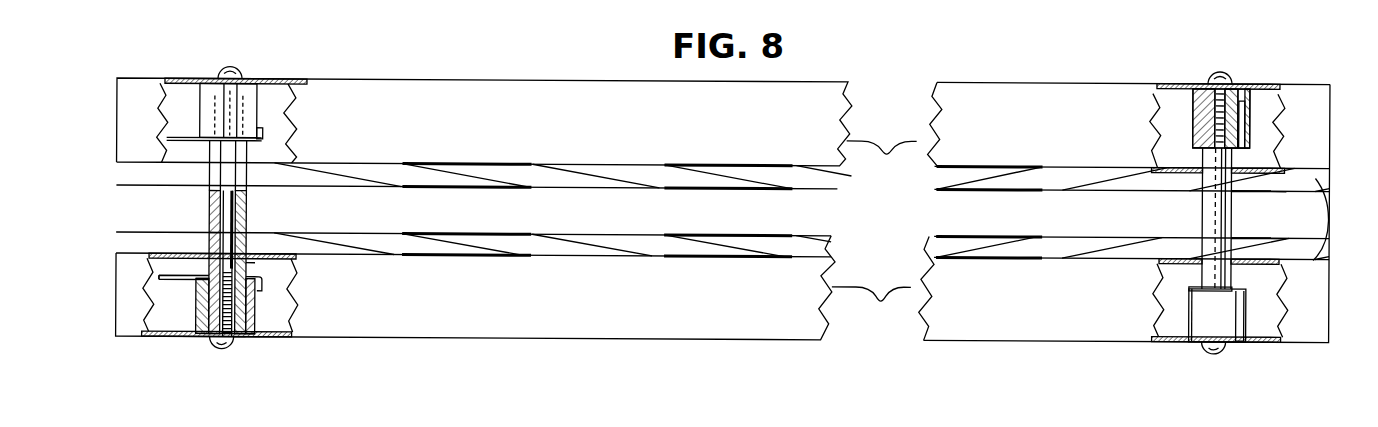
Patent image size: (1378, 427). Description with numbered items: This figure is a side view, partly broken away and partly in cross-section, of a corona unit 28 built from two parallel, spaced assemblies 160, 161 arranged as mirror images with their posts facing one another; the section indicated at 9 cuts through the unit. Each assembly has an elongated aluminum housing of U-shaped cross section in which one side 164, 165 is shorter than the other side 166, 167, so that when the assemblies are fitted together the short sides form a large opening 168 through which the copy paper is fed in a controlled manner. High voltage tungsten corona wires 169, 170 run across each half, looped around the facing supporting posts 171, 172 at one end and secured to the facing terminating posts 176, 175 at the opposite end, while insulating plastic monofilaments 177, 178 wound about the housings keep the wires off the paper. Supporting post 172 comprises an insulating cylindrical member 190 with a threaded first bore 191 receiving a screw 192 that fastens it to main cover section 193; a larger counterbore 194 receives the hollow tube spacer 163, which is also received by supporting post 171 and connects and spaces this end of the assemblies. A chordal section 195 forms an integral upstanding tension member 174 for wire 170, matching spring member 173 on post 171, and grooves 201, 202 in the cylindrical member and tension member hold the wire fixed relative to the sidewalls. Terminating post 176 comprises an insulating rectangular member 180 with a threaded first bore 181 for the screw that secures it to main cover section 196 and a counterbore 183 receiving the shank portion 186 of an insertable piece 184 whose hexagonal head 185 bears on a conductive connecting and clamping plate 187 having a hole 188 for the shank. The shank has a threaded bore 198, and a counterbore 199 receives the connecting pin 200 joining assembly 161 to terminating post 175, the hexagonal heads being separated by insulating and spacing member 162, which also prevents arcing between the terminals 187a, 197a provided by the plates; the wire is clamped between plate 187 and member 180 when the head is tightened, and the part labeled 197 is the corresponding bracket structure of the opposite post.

The section line 9 is at (115, 246).
The corona unit 28 is at (971, 78).
The corona unit assembly 160 is at (381, 70).
The corona unit assembly 161 is at (416, 342).
The insulating and spacing member 162 is at (200, 206).
The hollow tube spacer 163 is at (1222, 217).
The short side 164 is at (1318, 334).
The short side 165 is at (135, 93).
The long side 166 is at (1182, 247).
The long side 167 is at (1125, 185).
The opening 168 is at (1309, 219).
The corona wire 169 is at (871, 307).
The corona wire 170 is at (881, 164).
The supporting post 171 is at (1197, 305).
The supporting post 172 is at (1193, 117).
The spring member 173 is at (1245, 310).
The tension member 174 is at (1250, 104).
The terminating post 175 is at (254, 100).
The terminating post 176 is at (243, 340).
The insulating plastic monofilament 177 is at (601, 258).
The insulating plastic monofilament 178 is at (620, 177).
The rectangular member 180 is at (203, 311).
The first bore 181 is at (213, 338).
The counterbore 183 is at (256, 311).
The insertable piece 184 is at (266, 261).
The hexagonal head 185 is at (210, 268).
The shank portion 186 is at (200, 291).
The connecting and clamping plate 187 is at (262, 285).
The terminal 187a is at (160, 278).
The hole 188 is at (253, 257).
The cylindrical member 190 is at (1205, 82).
The first bore 191 is at (1243, 85).
The screw 192 is at (1215, 80).
The main cover section 193 is at (1058, 80).
The counterbore 194 is at (1193, 99).
The chordal section 195 is at (1246, 118).
The main cover section 196 is at (656, 341).
The bracket 197 is at (183, 134).
The terminal 197a is at (166, 137).
The threaded bore 198 is at (200, 311).
The counterbore 199 is at (212, 238).
The connecting pin 200 is at (210, 222).
The groove 201 is at (1195, 142).
The groove 202 is at (1252, 142).